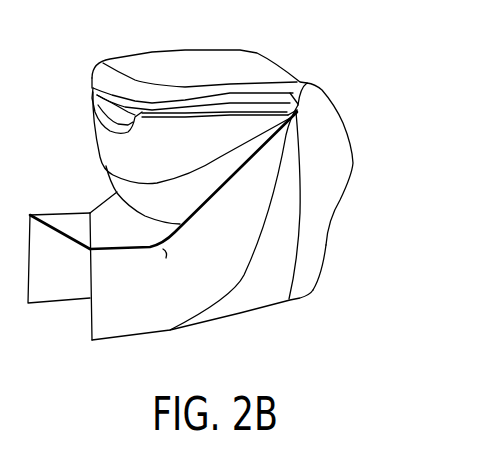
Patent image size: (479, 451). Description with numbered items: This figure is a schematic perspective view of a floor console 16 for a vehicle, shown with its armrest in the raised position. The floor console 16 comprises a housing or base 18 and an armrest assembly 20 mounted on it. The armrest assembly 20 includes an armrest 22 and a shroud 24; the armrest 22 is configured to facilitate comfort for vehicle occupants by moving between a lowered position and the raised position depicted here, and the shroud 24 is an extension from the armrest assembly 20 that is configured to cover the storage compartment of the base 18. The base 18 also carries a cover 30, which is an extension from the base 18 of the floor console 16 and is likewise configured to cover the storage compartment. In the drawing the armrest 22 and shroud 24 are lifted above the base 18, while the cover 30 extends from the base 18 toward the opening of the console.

The floor console 16 is at (357, 114).
The base 18 is at (308, 254).
The armrest assembly 20 is at (288, 54).
The armrest 22 is at (122, 59).
The shroud 24 is at (112, 143).
The cover 30 is at (213, 183).